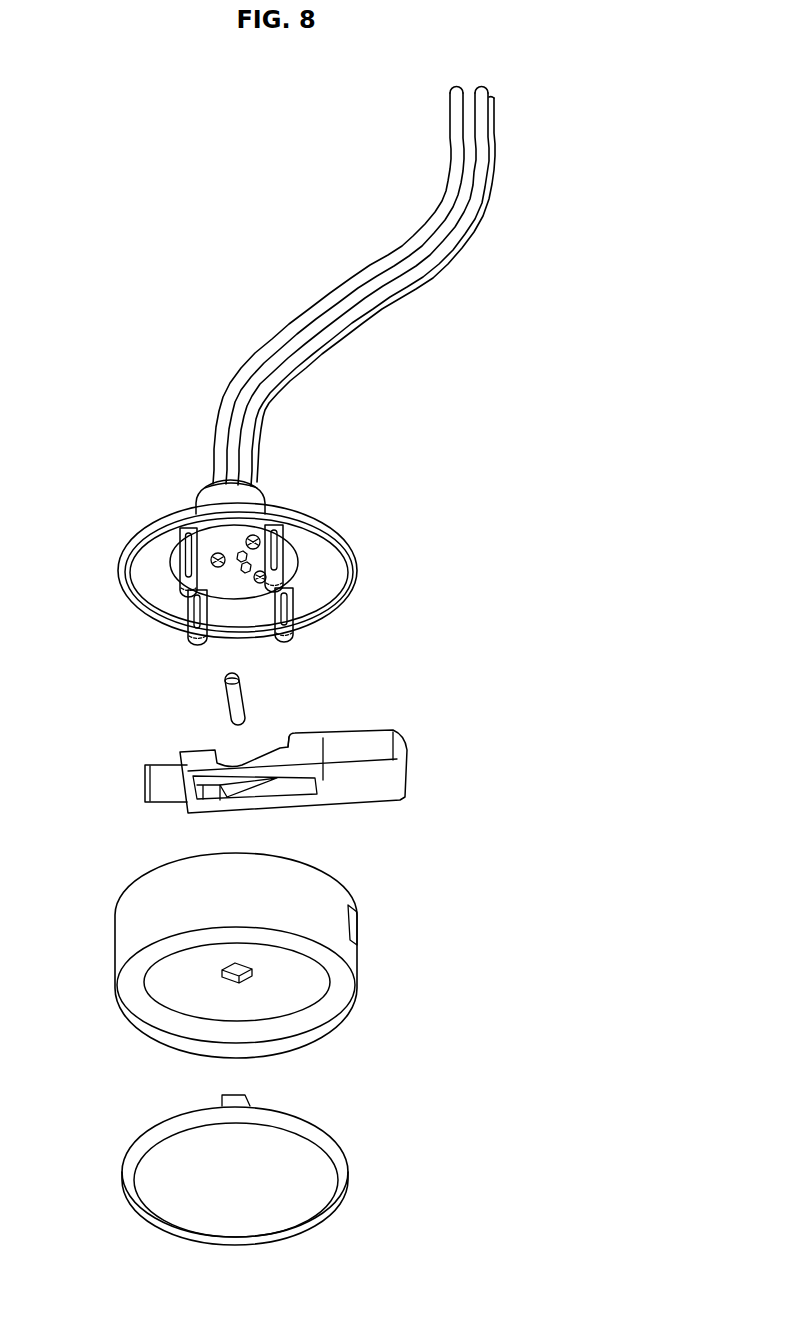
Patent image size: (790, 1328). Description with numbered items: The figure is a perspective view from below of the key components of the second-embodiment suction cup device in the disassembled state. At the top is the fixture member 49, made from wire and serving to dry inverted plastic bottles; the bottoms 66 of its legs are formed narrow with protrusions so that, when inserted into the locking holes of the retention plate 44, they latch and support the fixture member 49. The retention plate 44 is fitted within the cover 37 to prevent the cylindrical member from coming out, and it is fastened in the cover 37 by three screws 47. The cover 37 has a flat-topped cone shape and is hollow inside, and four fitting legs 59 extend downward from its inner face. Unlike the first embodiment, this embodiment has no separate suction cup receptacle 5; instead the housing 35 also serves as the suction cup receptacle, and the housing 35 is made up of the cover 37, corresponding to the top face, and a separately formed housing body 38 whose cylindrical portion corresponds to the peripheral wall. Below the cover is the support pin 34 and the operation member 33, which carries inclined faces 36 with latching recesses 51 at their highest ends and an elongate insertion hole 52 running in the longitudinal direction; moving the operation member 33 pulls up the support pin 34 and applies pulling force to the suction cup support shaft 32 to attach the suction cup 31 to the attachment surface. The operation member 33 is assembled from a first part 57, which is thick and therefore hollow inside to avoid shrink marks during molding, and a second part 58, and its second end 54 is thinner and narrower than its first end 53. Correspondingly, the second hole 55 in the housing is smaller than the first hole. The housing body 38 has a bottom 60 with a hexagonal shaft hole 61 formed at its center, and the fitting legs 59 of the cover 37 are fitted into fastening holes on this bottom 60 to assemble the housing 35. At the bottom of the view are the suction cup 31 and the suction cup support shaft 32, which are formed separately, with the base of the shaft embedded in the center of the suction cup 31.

The fixture member 49 is at (450, 132).
The suction cup receptacle 5 is at (217, 455).
The bottoms of the legs 66 is at (218, 553).
The screws 47 is at (253, 535).
The cover 37 is at (307, 517).
The fitting legs 59 is at (280, 560).
The retention plate 44 is at (293, 568).
The support pin 34 is at (245, 685).
The inclined faces 36 is at (248, 753).
The latching recesses 51 is at (290, 747).
The second part 58 is at (310, 757).
The first part 57 is at (377, 745).
The first end 53 is at (407, 763).
The second end 54 is at (143, 787).
The elongate insertion hole 52 is at (213, 793).
The operation member 33 is at (270, 754).
The housing 35 is at (120, 898).
The housing body 38 is at (234, 956).
The hexagonal shaft hole 61 is at (235, 972).
The second hole 55 is at (350, 935).
The bottom 60 is at (288, 987).
The suction cup support shaft 32 is at (223, 1100).
The suction cup 31 is at (273, 1169).